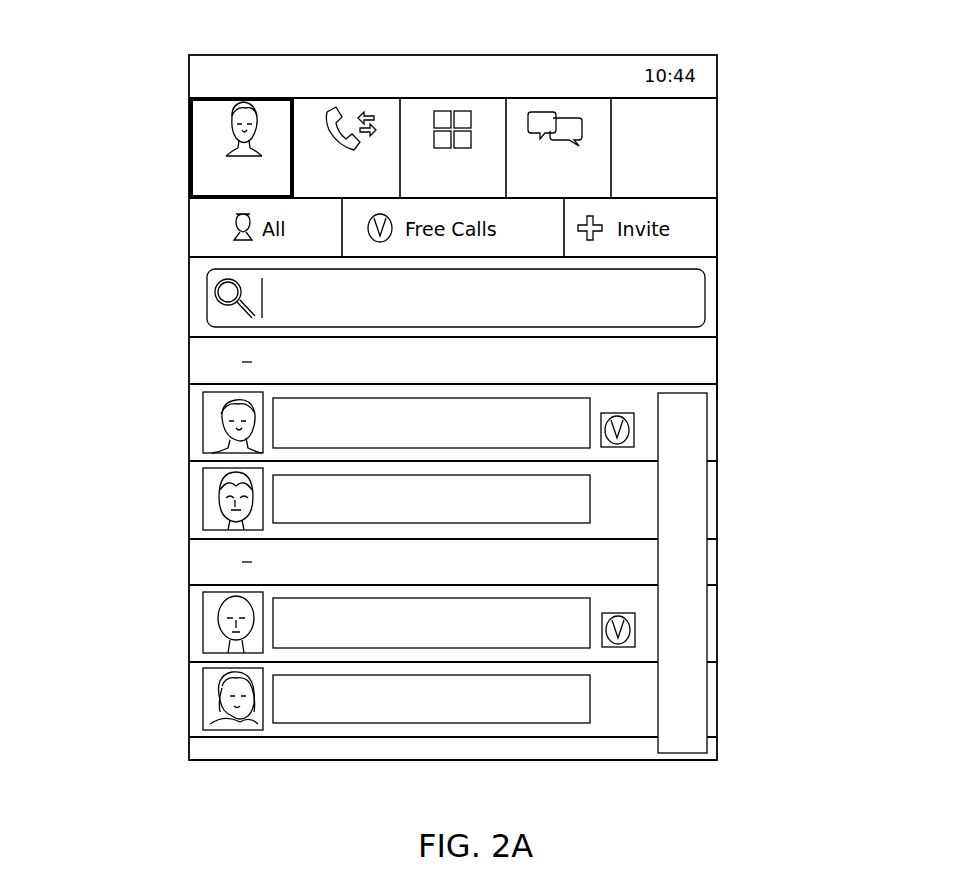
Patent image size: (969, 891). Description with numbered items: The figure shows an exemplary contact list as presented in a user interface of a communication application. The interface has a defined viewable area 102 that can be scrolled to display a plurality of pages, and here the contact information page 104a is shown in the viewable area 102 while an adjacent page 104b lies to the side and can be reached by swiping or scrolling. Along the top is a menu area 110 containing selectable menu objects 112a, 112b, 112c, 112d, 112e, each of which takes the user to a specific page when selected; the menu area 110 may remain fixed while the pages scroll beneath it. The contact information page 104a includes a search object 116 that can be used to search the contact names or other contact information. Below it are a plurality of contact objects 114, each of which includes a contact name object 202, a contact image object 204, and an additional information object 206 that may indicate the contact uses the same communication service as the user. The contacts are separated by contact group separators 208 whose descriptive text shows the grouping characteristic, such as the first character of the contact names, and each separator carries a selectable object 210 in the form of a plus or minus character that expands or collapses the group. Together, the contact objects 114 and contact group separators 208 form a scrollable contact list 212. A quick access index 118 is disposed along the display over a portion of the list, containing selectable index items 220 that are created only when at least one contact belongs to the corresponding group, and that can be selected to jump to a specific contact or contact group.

The viewable area 102 is at (710, 490).
The contact information page 104a is at (280, 750).
The page 104b is at (843, 248).
The menu area 110 is at (493, 102).
The selectable menu object 112a is at (246, 105).
The selectable menu object 112b is at (348, 103).
The selectable menu object 112c is at (452, 105).
The selectable menu object 112d is at (550, 105).
The selectable menu object 112e is at (633, 105).
The contact object 114 is at (411, 603).
The search object 116 is at (705, 297).
The quick access index 118 is at (731, 573).
The contact name object 202 is at (358, 425).
The contact image object 204 is at (203, 440).
The additional information object 206 is at (618, 647).
The contact group separator 208 is at (411, 368).
The selectable object 210 is at (262, 362).
The contact list 212 is at (374, 579).
The selectable index item 220 is at (695, 558).